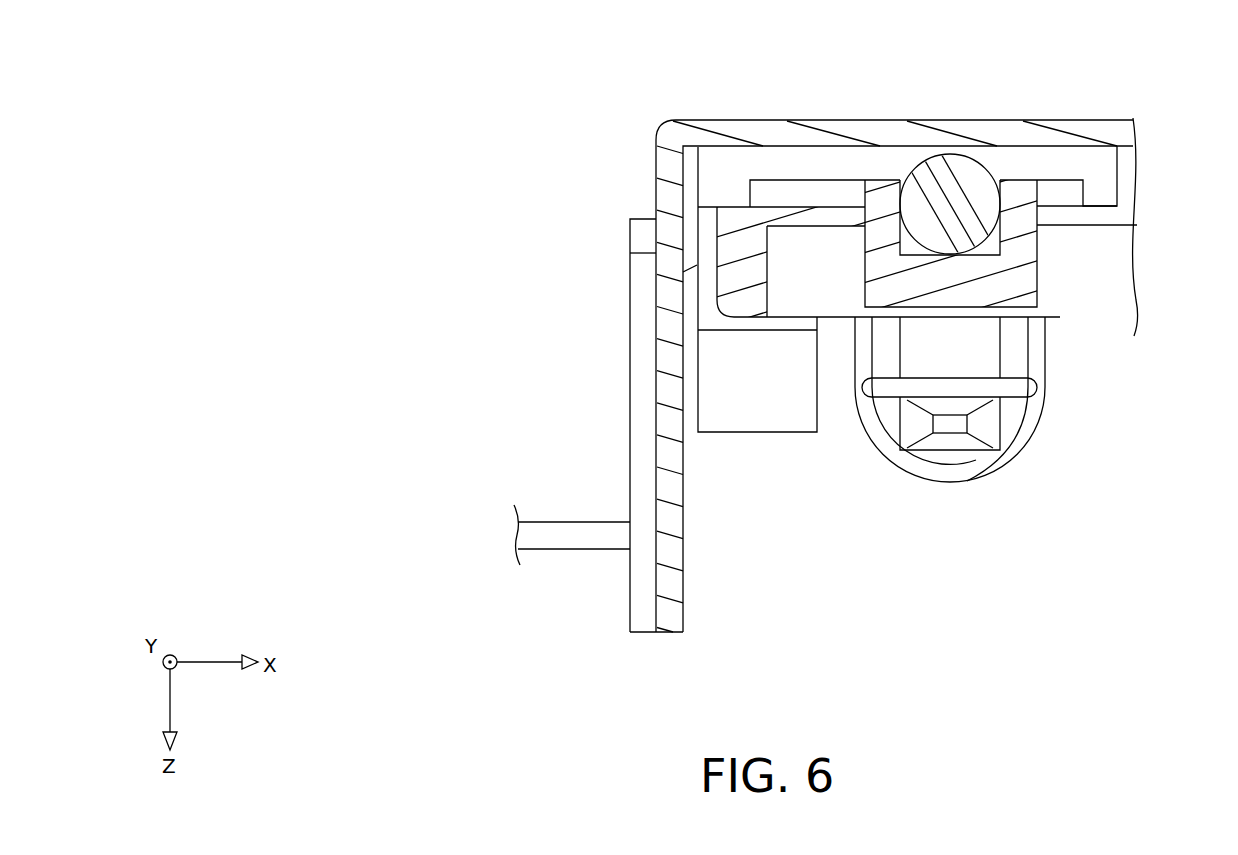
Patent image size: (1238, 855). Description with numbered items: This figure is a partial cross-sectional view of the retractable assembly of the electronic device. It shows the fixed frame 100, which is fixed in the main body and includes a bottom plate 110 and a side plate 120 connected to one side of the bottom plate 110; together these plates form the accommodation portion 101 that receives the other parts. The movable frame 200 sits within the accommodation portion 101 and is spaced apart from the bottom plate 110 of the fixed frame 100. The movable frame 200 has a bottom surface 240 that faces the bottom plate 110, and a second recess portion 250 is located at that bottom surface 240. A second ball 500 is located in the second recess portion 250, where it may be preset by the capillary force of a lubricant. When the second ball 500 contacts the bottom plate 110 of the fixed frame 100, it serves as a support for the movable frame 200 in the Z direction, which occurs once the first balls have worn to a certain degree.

The fixed frame 100 is at (660, 118).
The bottom plate 110 is at (815, 133).
The accommodation portion 101 is at (841, 167).
The side plate 120 is at (673, 332).
The movable frame 200 is at (1007, 270).
The bottom surface 240 is at (1020, 177).
The second recess portion 250 is at (1000, 238).
The second ball 500 is at (962, 190).